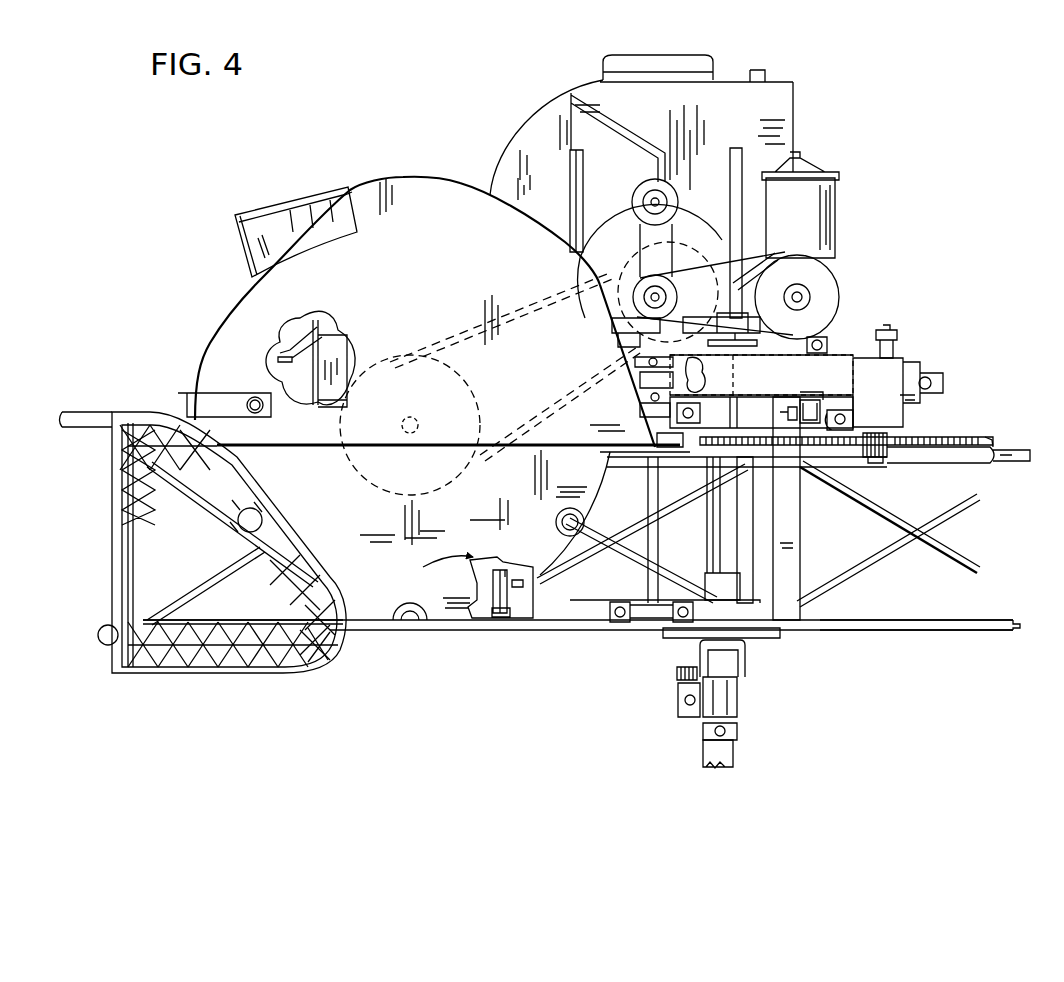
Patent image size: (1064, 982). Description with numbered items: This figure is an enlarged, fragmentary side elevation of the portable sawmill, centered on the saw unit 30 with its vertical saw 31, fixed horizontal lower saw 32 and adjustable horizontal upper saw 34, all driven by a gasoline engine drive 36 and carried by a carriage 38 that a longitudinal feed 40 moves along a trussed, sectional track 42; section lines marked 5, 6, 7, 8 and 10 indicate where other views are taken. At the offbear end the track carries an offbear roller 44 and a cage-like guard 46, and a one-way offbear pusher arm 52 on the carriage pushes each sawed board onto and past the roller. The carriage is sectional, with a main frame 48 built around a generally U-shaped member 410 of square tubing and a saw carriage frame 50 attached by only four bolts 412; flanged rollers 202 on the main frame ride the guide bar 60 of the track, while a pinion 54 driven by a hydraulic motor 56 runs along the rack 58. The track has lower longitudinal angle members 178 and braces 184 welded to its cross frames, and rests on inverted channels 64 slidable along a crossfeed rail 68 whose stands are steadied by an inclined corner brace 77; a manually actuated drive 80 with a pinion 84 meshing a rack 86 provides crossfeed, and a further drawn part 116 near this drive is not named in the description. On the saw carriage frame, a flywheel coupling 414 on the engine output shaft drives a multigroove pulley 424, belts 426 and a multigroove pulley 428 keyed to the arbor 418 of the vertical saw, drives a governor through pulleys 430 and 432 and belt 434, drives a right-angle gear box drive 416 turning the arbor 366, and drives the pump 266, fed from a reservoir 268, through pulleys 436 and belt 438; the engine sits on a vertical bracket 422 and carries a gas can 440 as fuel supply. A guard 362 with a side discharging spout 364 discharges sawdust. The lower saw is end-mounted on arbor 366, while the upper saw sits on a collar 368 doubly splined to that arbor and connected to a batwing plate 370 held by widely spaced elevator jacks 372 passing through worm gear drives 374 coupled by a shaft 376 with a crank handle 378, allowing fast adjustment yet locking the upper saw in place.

The saw unit 30 is at (470, 133).
The vertical saw 31 is at (381, 626).
The lower saw 32 is at (590, 634).
The upper saw 34 is at (620, 597).
The gasoline engine drive 36 is at (818, 143).
The carriage 38 is at (882, 332).
The longitudinal feed 40 is at (905, 422).
The track 42 is at (937, 636).
The offbear roller 44 is at (105, 632).
The cage-like guard 46 is at (322, 650).
The main frame 48 is at (830, 392).
The saw carriage frame 50 is at (798, 522).
The offbear pusher arm 52 is at (492, 620).
The pinion 54 is at (884, 460).
The hydraulic motor 56 is at (893, 355).
The rack 58 is at (984, 437).
The guide bar 60 is at (950, 437).
The inverted channels 64 is at (748, 671).
The crossfeed rail 68 is at (740, 713).
The inclined corner brace 77 is at (735, 763).
The manually actuated drive 80 is at (676, 684).
The pinion 84 is at (681, 692).
The rack 86 is at (735, 686).
The block 116 is at (738, 731).
The longitudinal angle member 178 is at (1017, 620).
The braces 184 is at (955, 570).
The rollers 202 is at (853, 420).
The pump 266 is at (838, 306).
The reservoir 268 is at (836, 212).
The guard 362 is at (396, 172).
The side discharging spout 364 is at (237, 226).
The arbor 366 is at (655, 497).
The collar 368 is at (660, 444).
The batwing plate 370 is at (642, 411).
The elevator jacks 372 is at (742, 165).
The worm gear drives 374 is at (794, 290).
The shaft 376 is at (707, 374).
The crank handle 378 is at (280, 352).
The U-shaped member 410 is at (800, 400).
The bolts 412 is at (828, 343).
The flywheel coupling 414 is at (725, 250).
The right-angle gear box drive 416 is at (632, 340).
The arbor 418 is at (400, 425).
The bracket 422 is at (598, 232).
The multigroove pulley 424 is at (630, 308).
The belts 426 is at (590, 272).
The multigroove pulley 428 is at (390, 358).
The pulley 430 is at (670, 202).
The pulley 432 is at (617, 330).
The belt 434 is at (672, 250).
The pulleys 436 is at (838, 280).
The belt 438 is at (752, 262).
The gas can 440 is at (797, 100).
The section line 5 is at (664, 262).
The section line 6 is at (575, 555).
The section line 7 is at (822, 473).
The section line 8 is at (795, 340).
The section line 10 is at (660, 755).